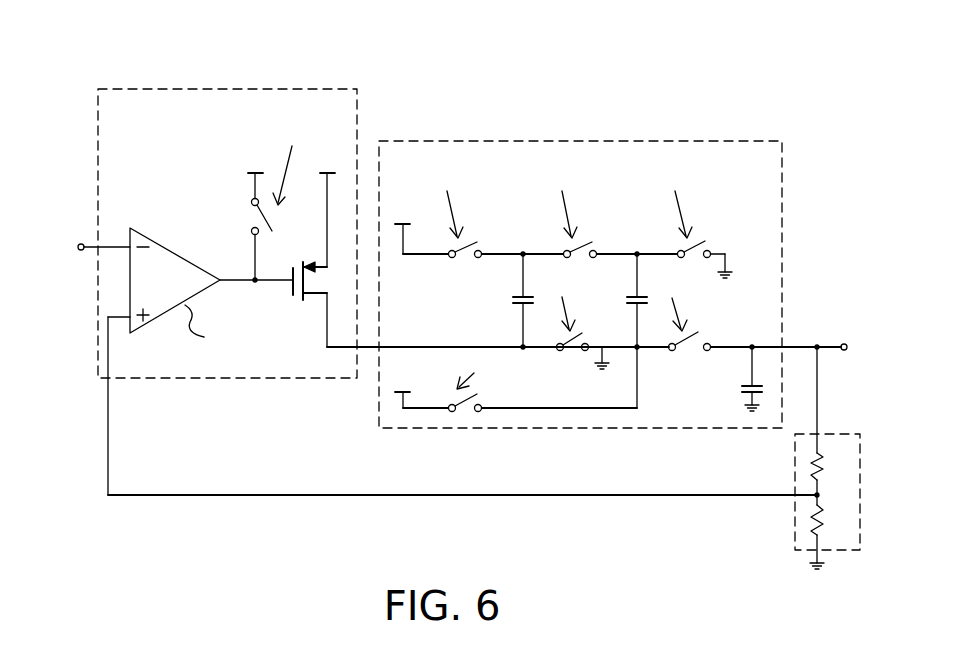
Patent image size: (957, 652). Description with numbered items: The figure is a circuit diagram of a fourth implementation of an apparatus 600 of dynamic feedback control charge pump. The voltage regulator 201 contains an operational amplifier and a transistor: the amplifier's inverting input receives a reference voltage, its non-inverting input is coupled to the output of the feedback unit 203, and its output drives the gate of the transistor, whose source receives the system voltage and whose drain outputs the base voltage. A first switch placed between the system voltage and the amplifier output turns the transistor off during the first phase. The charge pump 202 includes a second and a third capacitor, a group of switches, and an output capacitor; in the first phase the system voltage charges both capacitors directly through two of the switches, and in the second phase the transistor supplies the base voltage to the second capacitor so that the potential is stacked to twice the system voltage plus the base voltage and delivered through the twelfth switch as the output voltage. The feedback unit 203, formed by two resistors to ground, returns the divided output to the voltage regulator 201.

The voltage regulator 201 is at (170, 87).
The charge pump 202 is at (492, 141).
The feedback unit 203 is at (795, 518).
The apparatus of dynamic feedback control charge pump 600 is at (840, 636).